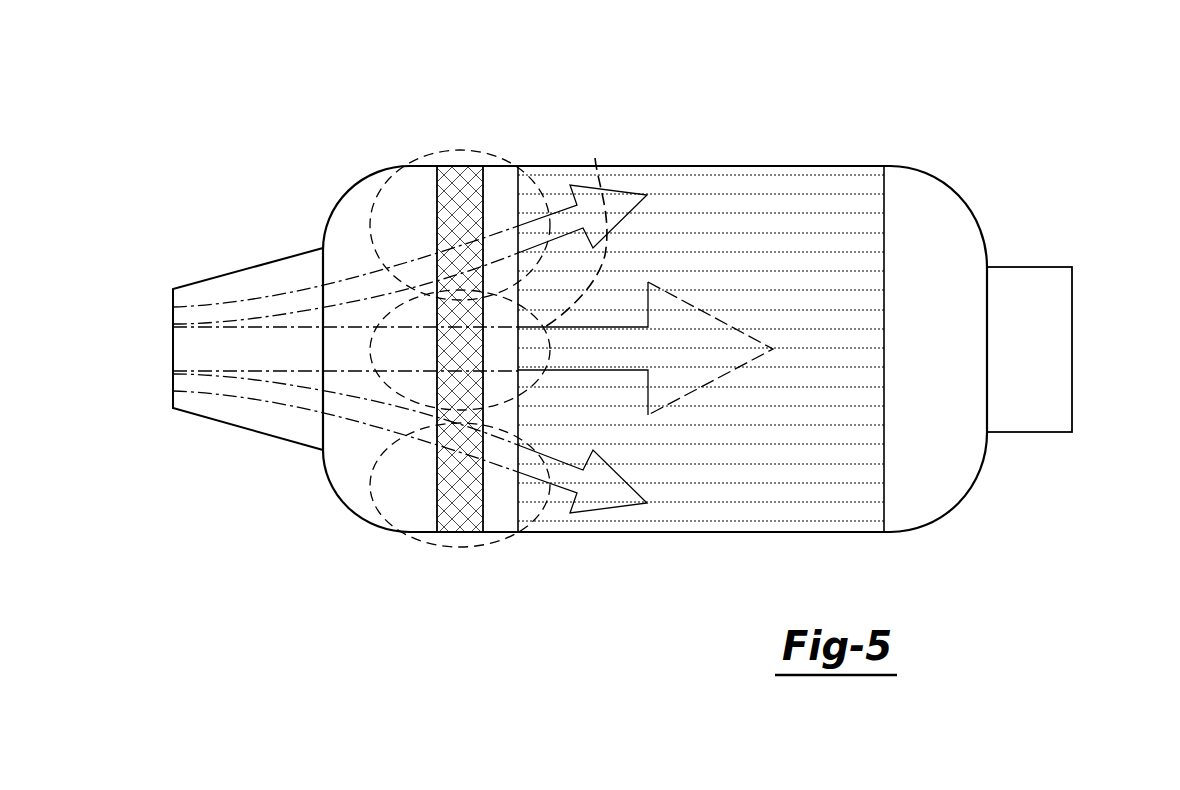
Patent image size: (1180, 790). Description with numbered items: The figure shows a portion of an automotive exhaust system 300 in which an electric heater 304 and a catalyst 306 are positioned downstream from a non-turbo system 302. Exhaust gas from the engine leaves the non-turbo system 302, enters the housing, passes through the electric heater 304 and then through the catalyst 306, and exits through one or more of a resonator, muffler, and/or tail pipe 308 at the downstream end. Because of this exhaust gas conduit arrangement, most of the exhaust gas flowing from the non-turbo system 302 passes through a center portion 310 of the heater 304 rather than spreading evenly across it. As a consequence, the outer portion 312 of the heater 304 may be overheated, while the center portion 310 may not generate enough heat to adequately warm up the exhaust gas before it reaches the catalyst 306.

The automotive exhaust system 300 is at (1011, 124).
The non-turbo system 302 is at (247, 430).
The electric heater 304 is at (437, 213).
The catalyst 306 is at (795, 207).
The resonator, muffler, and/or tail pipe 308 is at (1045, 307).
The center portion of the heater 310 is at (595, 158).
The outer portion of the heater 312 is at (413, 160).